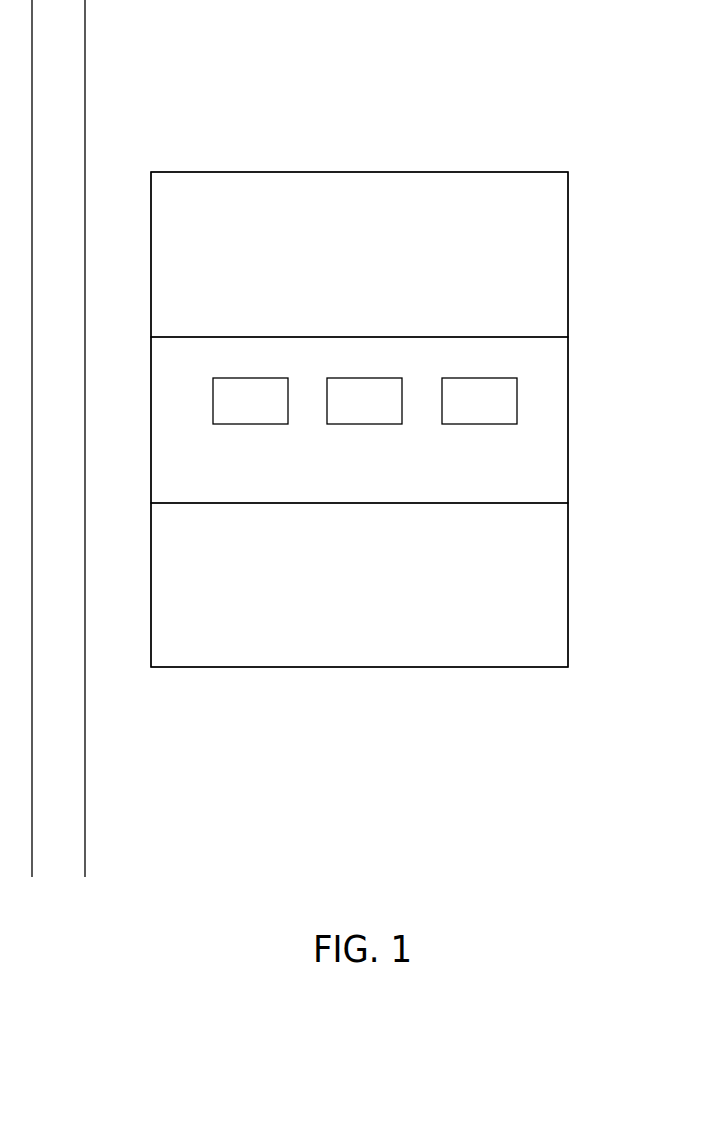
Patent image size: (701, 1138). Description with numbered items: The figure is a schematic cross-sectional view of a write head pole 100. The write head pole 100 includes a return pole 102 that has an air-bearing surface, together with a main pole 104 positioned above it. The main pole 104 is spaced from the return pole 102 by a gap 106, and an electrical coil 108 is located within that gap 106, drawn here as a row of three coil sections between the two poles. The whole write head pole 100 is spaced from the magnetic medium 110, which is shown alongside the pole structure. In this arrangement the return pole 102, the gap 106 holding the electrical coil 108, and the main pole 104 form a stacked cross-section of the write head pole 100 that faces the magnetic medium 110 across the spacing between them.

The write head pole 100 is at (238, 72).
The return pole 102 is at (500, 605).
The main pole 104 is at (500, 275).
The gap 106 is at (500, 481).
The electrical coil 108 is at (271, 412).
The magnetic medium 110 is at (65, 148).